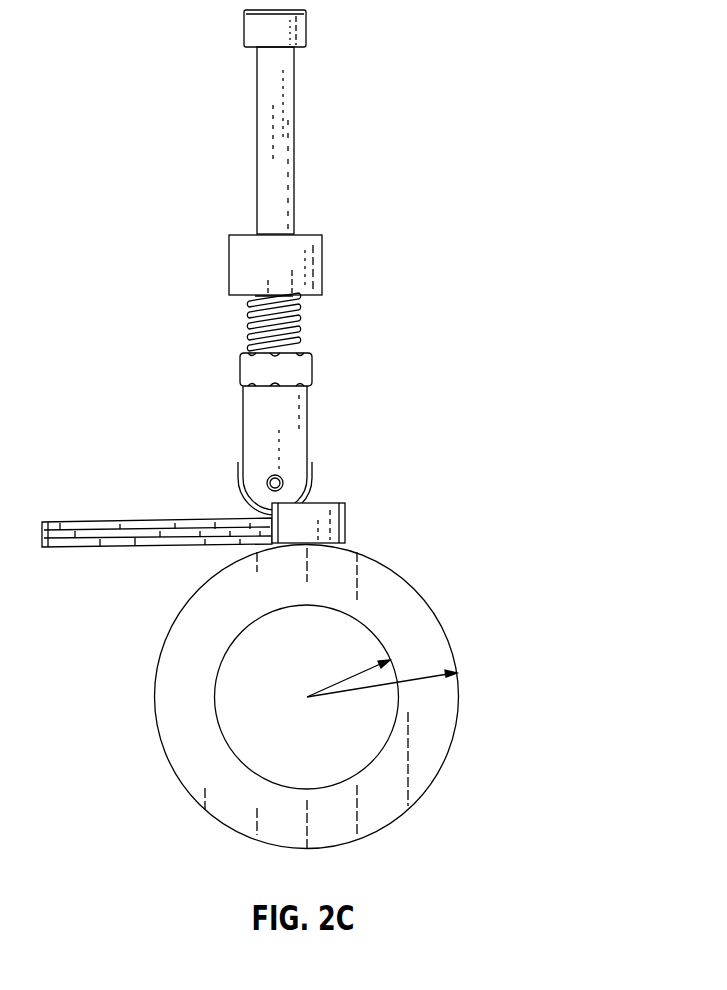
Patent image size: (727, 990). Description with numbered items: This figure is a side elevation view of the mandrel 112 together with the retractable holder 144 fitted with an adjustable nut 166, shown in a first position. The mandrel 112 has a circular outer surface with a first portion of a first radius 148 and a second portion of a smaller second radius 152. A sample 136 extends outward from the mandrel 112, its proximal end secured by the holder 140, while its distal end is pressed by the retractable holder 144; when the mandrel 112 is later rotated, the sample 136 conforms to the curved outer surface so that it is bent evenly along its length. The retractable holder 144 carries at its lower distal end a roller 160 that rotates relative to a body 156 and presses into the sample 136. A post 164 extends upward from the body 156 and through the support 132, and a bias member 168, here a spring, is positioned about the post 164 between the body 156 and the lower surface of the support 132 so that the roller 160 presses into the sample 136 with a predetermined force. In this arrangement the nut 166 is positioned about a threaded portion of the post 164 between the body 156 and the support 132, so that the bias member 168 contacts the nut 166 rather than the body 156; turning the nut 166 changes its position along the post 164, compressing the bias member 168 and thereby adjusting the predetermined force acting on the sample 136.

The mandrel 112 is at (494, 634).
The support 132 is at (313, 258).
The sample 136 is at (93, 528).
The holder 140 is at (330, 525).
The retractable holder 144 is at (378, 49).
The first radius 148 is at (348, 690).
The second radius 152 is at (343, 678).
The body 156 is at (268, 410).
The roller 160 is at (240, 483).
The post 164 is at (262, 78).
The nut 166 is at (297, 374).
The bias member 168 is at (252, 322).